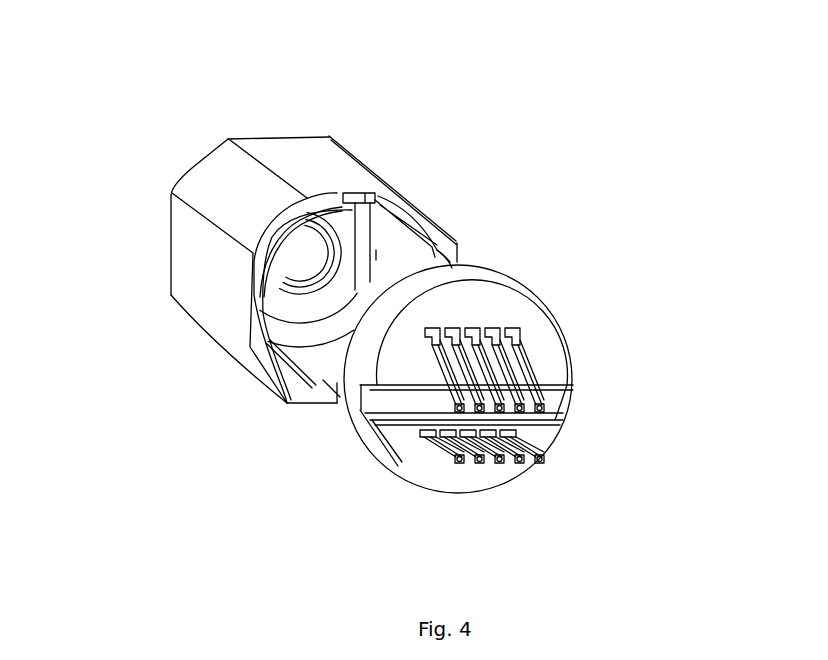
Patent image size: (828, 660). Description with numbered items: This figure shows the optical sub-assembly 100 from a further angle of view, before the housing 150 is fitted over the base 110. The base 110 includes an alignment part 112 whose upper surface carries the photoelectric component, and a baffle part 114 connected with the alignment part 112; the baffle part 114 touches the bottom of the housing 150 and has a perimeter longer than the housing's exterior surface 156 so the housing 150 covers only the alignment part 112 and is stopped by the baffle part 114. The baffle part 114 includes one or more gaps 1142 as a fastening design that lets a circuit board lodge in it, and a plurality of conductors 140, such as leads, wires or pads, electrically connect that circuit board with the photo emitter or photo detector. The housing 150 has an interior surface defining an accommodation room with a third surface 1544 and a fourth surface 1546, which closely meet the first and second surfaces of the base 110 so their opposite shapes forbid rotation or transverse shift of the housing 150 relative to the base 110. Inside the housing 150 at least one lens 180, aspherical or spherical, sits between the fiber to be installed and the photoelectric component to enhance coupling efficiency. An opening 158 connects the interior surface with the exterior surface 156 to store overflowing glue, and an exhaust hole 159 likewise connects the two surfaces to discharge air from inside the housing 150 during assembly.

The optical sub-assembly 100 is at (122, 107).
The base 110 is at (476, 264).
The alignment part 112 is at (360, 400).
The baffle part 114 is at (478, 286).
The gaps 1142 is at (570, 398).
The conductors 140 is at (530, 347).
The housing 150 is at (205, 338).
The third surface 1544 is at (450, 242).
The fourth surface 1546 is at (310, 362).
The exterior surface 156 is at (282, 160).
The opening 158 is at (353, 188).
The exhaust hole 159 is at (402, 247).
The lens 180 is at (292, 262).